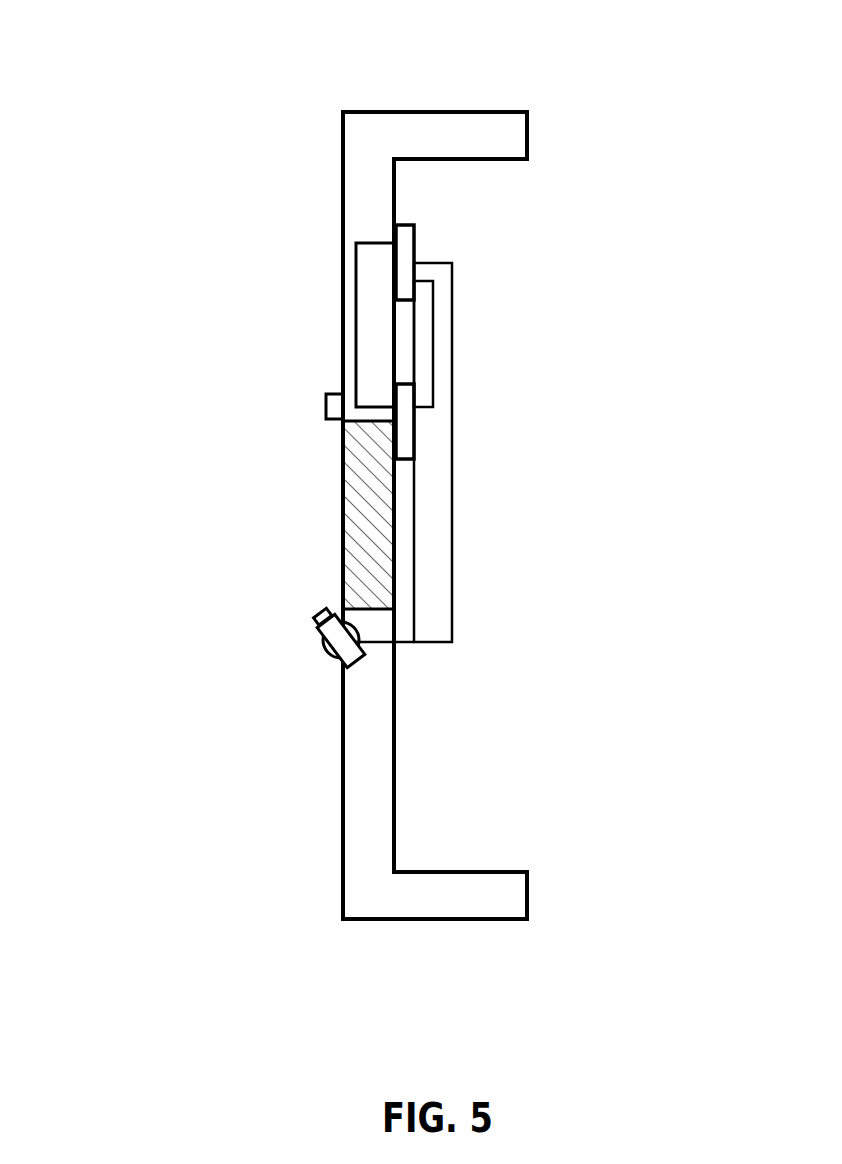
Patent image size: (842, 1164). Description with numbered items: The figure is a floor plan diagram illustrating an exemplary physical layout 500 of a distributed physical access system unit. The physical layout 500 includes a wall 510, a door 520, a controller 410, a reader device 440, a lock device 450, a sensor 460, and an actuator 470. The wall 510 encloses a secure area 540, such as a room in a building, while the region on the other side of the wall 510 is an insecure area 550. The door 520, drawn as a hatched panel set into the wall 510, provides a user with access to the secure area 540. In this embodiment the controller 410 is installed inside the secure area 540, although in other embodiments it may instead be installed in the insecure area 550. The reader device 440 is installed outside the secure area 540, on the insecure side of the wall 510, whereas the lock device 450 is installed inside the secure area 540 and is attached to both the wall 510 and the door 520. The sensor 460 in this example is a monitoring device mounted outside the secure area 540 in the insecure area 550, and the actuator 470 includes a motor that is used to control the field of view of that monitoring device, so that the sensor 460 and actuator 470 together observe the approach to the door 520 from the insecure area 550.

The physical layout 500 is at (220, 60).
The wall 510 is at (343, 289).
The door 520 is at (343, 512).
The controller 410 is at (414, 232).
The reader device 440 is at (326, 407).
The lock device 450 is at (414, 418).
The sensor 460 is at (320, 622).
The actuator 470 is at (330, 653).
The secure area 540 is at (610, 698).
The insecure area 550 is at (108, 891).